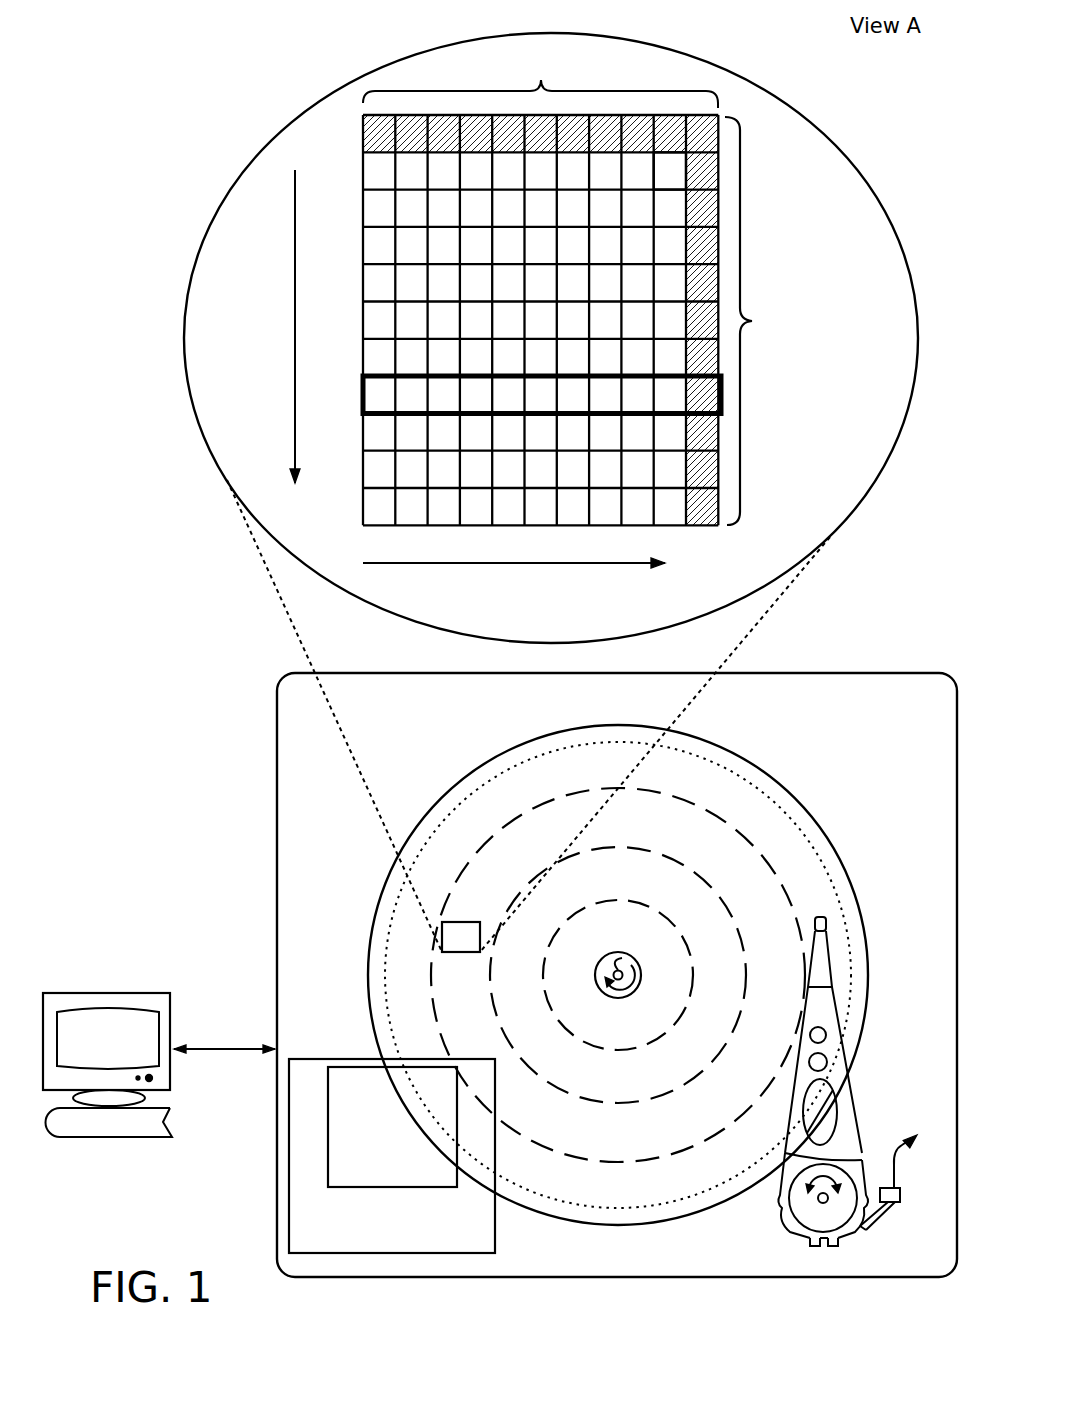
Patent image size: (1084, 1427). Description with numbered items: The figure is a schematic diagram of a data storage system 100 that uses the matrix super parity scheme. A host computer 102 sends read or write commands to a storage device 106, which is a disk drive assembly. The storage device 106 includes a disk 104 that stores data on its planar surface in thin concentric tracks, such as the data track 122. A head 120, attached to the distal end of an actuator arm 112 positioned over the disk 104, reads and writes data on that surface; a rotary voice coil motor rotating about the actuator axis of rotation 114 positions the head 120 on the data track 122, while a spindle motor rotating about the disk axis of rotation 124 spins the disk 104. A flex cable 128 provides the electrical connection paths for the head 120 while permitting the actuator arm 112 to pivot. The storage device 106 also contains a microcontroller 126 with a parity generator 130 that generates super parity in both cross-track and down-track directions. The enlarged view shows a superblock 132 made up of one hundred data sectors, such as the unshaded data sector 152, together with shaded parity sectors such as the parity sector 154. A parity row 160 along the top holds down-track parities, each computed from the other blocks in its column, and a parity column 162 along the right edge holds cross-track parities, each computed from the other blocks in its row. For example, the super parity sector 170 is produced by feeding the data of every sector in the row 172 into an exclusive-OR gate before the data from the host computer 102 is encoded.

The data storage system 100 is at (150, 68).
The host computer 102 is at (167, 1118).
The disk 104 is at (615, 730).
The storage device 106 is at (277, 1242).
The actuator arm 112 is at (855, 1066).
The actuator axis of rotation 114 is at (785, 1210).
The head 120 is at (818, 936).
The data track 122 is at (758, 790).
The disk axis of rotation 124 is at (616, 957).
The microcontroller 126 is at (377, 1242).
The flex cable 128 is at (865, 1229).
The parity generator 130 is at (377, 1176).
The superblock 132 is at (808, 311).
The data sector 152 is at (673, 180).
The parity sector 154 is at (673, 133).
The parity row 160 is at (352, 127).
The parity column 162 is at (752, 322).
The super parity sector 170 is at (713, 398).
The row 172 is at (677, 422).